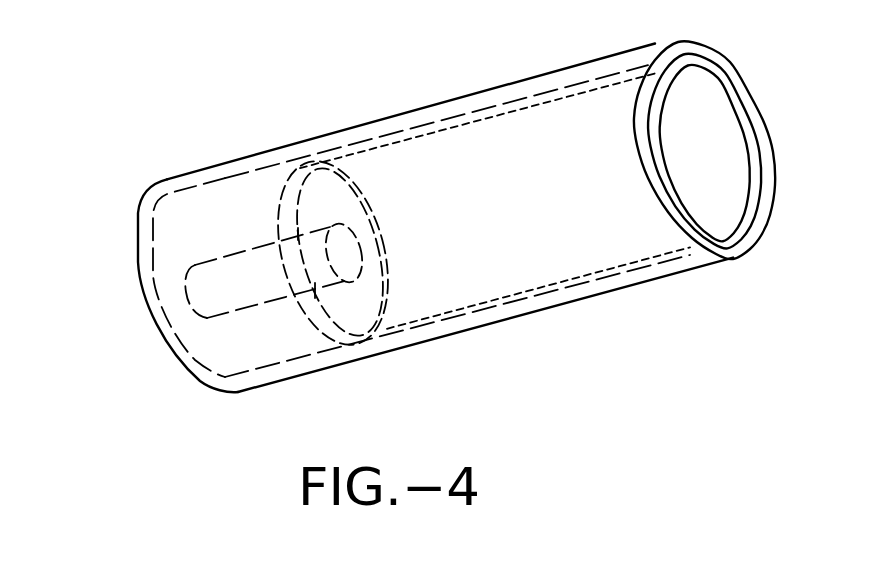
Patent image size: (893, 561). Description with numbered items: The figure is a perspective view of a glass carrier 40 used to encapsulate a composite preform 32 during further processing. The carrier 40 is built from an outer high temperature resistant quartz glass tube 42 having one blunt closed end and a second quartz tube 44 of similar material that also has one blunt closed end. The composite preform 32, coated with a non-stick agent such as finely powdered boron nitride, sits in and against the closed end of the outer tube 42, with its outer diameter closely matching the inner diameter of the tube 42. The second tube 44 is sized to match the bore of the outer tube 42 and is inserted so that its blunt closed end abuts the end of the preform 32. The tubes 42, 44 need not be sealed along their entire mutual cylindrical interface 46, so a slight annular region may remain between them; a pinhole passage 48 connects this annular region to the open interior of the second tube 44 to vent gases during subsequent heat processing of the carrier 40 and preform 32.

The glass carrier 40 is at (132, 167).
The composite preform 32 is at (247, 337).
The outer quartz glass tube 42 is at (207, 167).
The second quartz tube 44 is at (413, 133).
The cylindrical interface 46 is at (580, 285).
The pinhole passage 48 is at (478, 307).